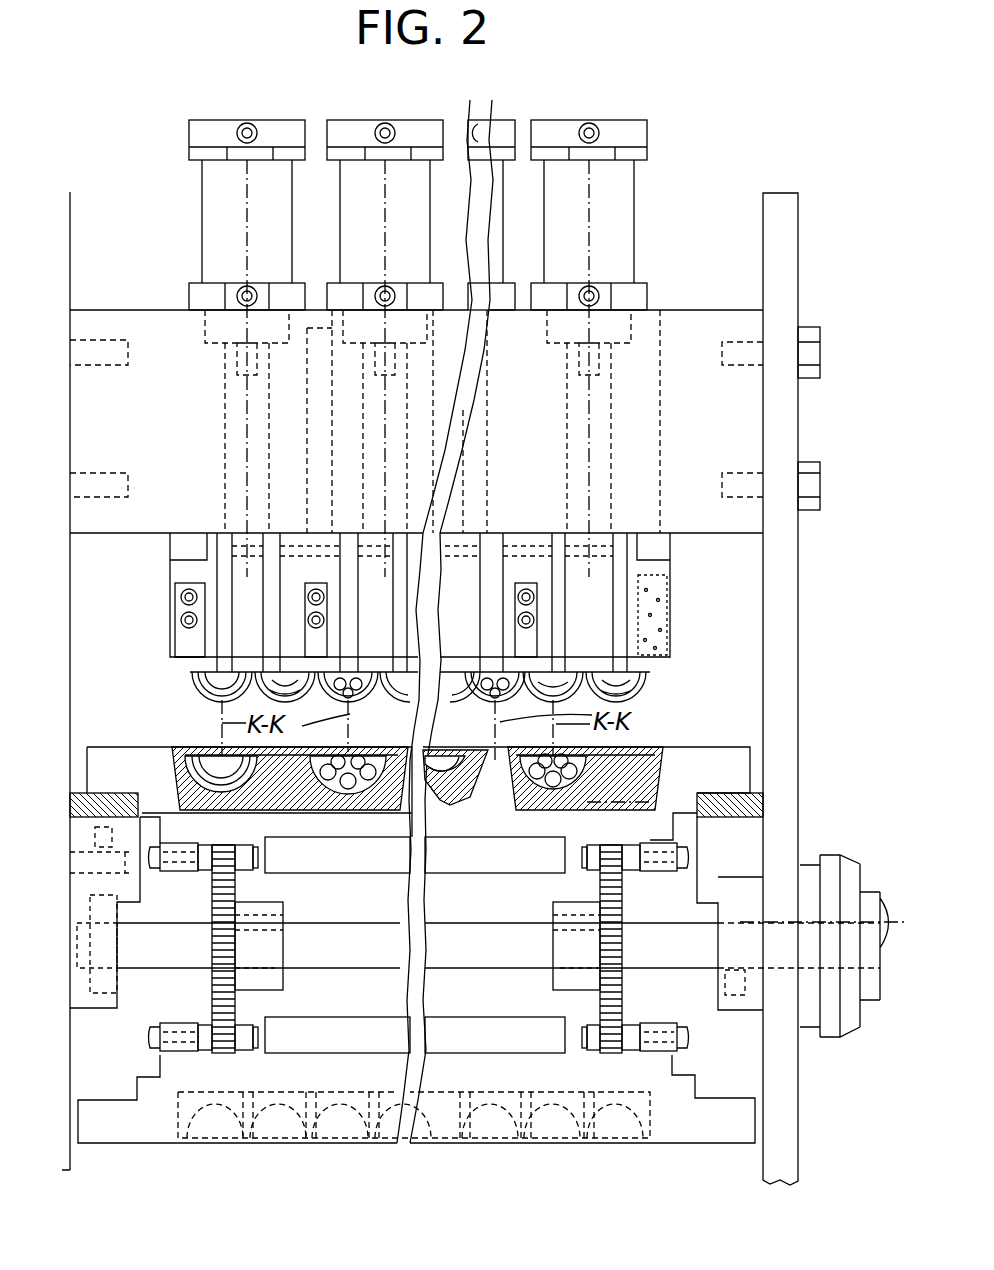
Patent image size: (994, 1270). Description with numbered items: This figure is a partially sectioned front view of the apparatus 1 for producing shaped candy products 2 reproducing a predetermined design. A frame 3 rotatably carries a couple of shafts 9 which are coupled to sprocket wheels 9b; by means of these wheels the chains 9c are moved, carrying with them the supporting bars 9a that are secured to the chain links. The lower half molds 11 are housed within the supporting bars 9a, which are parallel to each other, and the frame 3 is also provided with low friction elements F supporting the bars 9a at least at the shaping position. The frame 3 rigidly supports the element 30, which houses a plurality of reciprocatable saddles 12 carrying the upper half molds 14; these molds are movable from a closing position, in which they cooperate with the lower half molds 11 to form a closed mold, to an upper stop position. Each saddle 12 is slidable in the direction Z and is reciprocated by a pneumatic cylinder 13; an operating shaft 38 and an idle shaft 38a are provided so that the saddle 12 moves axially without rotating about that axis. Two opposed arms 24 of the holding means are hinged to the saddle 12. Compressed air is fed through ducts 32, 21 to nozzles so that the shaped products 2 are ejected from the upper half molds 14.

The apparatus 1 is at (636, 104).
The shaped candy products 2 is at (257, 693).
The frame 3 is at (786, 568).
The shafts 9 is at (660, 935).
The supporting bars 9a is at (703, 758).
The sprocket wheels 9b is at (215, 890).
The chains 9c is at (250, 870).
The lower half molds 11 is at (178, 772).
The saddles 12 is at (178, 584).
The pneumatic cylinder 13 is at (217, 200).
The upper half molds 14 is at (207, 684).
The duct 21 is at (190, 621).
The opposed arms 24 is at (222, 563).
The element 30 is at (137, 320).
The duct 32 is at (186, 656).
The operating shaft 38 is at (232, 388).
The idle shaft 38a is at (305, 417).
The low friction elements F is at (98, 801).
The direction z—z Z is at (252, 176).